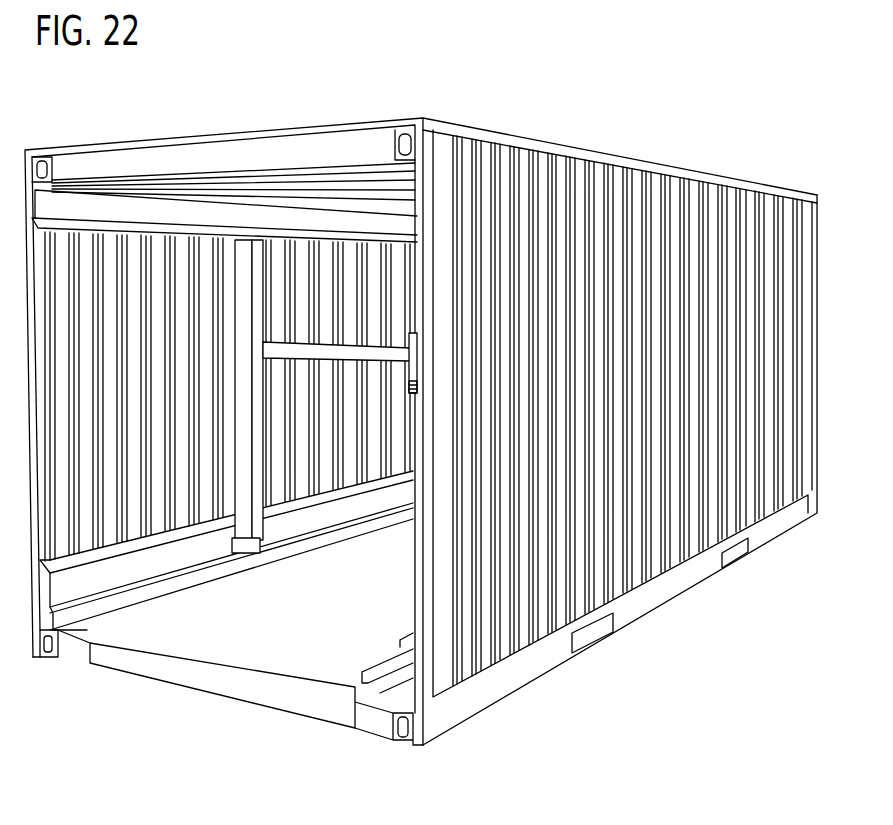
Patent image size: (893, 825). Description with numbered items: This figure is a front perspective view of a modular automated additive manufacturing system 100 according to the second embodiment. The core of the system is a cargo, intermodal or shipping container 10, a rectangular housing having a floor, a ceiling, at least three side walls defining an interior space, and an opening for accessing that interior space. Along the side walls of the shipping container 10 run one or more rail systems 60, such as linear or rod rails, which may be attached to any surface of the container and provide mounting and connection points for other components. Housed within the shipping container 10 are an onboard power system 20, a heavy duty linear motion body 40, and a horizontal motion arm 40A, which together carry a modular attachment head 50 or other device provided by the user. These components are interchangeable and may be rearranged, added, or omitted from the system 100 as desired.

The modular automated additive manufacturing system 100 is at (698, 90).
The shipping container 10 is at (598, 170).
The onboard power system 20 is at (253, 137).
The linear motion body 40 is at (261, 262).
The horizontal motion arm 40A is at (330, 352).
The modular attachment head 50 is at (410, 350).
The rail system 60 is at (125, 207).